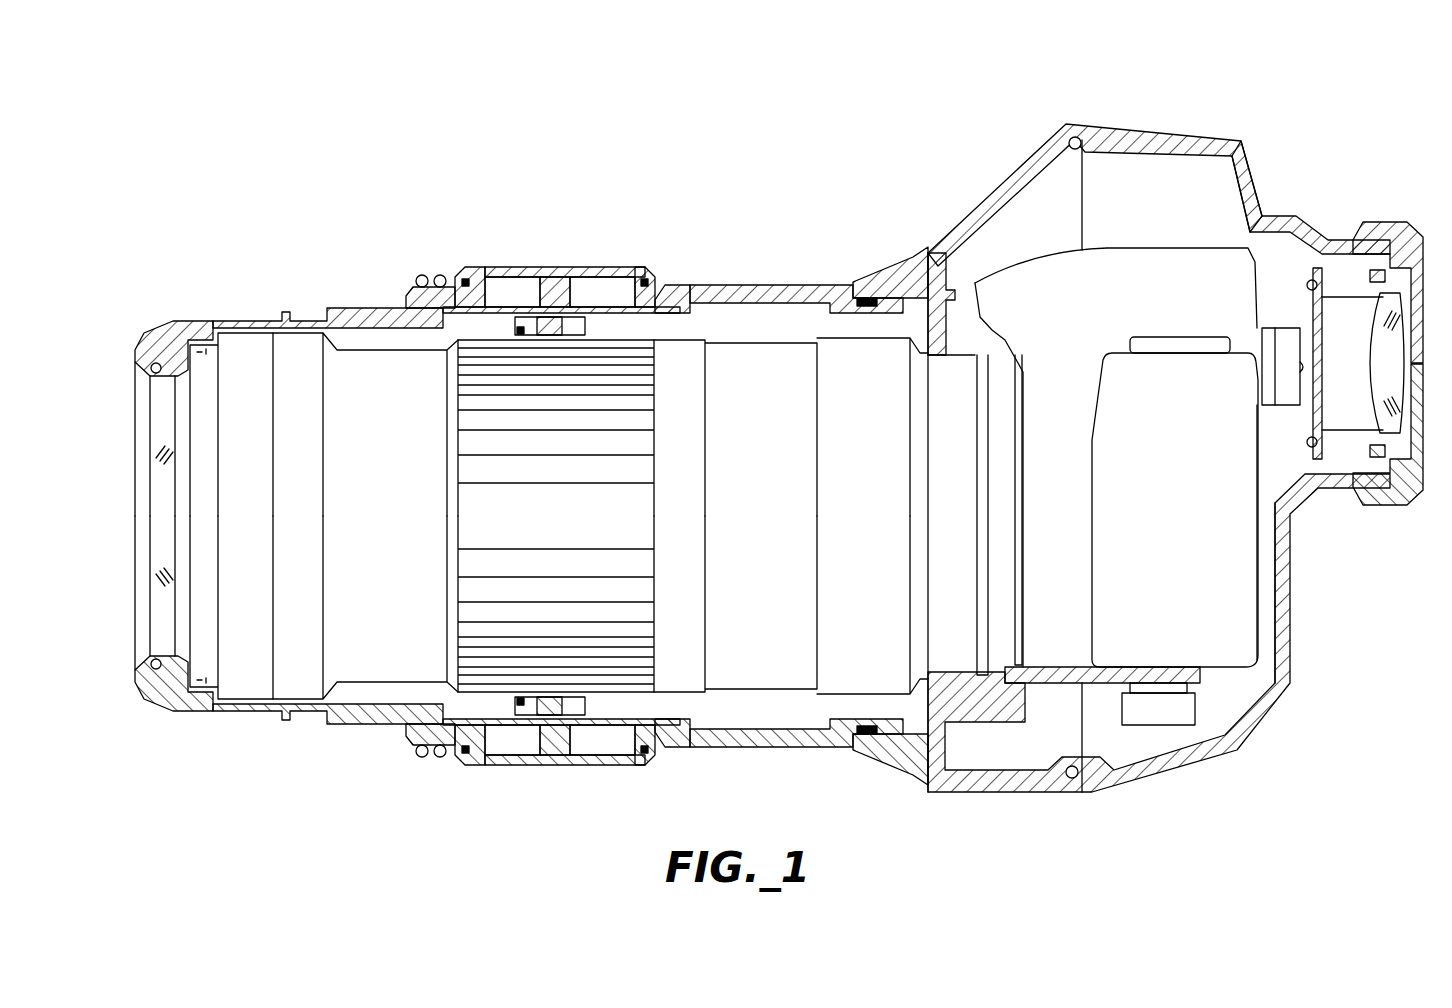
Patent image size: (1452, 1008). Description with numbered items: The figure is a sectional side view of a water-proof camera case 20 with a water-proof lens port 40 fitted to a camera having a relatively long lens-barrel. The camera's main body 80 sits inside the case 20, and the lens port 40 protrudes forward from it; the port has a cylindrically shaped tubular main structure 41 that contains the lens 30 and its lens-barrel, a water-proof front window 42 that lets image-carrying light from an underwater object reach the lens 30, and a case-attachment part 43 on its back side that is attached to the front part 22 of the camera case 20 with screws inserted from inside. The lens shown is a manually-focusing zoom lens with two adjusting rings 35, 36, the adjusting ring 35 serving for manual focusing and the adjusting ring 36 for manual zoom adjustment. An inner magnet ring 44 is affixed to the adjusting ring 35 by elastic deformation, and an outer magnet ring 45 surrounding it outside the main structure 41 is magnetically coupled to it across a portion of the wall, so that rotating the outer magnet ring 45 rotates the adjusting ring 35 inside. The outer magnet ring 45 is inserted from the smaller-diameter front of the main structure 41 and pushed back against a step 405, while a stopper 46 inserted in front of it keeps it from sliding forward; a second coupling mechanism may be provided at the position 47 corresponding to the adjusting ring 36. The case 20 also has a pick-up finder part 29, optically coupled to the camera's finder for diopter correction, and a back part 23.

The camera case 20 is at (1175, 426).
The front part 22 is at (1003, 207).
The back part 23 is at (1260, 183).
The pick-up finder part 29 is at (1398, 222).
The lens 30 is at (235, 348).
The adjusting ring 35 is at (647, 608).
The adjusting ring 36 is at (290, 677).
The water-proof lens port 40 is at (687, 222).
The tubular main structure 41 is at (745, 283).
The water-proof front window 42 is at (167, 650).
The case-attachment part 43 is at (890, 265).
The inner magnet ring 44 is at (522, 708).
The outer magnet ring 45 is at (592, 251).
The stopper 46 is at (412, 298).
The position for second magnetically coupling mechanism 47 is at (308, 312).
The step 405 is at (676, 284).
The main body 80 is at (1238, 540).